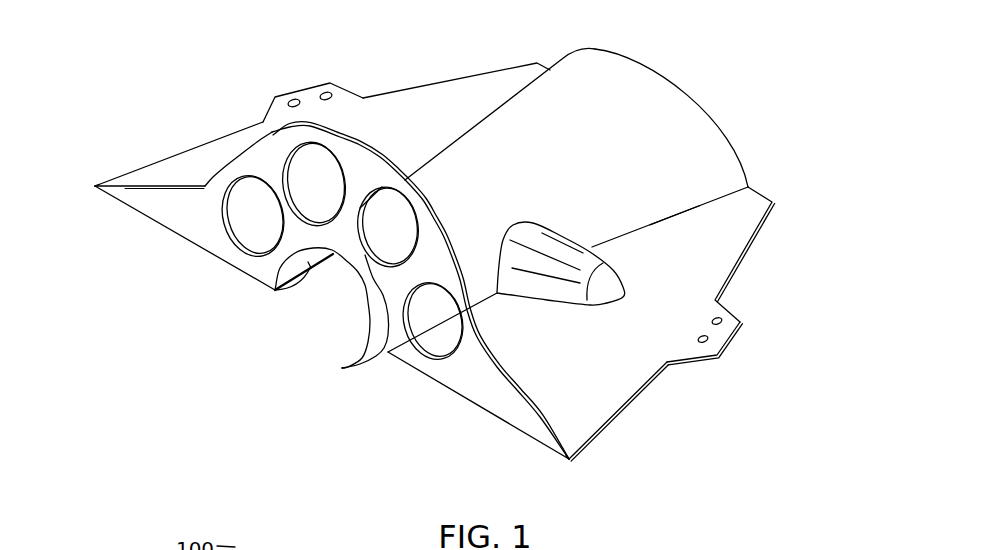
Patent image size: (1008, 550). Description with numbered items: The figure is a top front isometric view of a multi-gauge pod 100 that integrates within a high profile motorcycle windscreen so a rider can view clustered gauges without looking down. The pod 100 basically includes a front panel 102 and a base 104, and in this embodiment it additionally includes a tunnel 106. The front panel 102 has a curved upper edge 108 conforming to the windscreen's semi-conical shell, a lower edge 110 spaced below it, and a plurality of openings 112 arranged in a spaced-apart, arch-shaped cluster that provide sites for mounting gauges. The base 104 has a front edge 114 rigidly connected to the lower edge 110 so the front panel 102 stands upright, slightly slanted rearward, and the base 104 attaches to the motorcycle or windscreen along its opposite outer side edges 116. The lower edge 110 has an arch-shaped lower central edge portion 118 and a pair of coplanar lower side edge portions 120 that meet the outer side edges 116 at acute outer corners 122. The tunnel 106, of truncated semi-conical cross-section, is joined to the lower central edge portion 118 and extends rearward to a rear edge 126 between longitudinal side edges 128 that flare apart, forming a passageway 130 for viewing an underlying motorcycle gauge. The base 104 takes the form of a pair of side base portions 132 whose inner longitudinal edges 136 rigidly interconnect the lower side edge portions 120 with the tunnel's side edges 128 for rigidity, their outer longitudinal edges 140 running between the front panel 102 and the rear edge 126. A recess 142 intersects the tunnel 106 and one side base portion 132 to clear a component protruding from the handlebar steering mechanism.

The multi-gauge pod 100 is at (203, 36).
The front panel 102 is at (370, 130).
The base 104 is at (757, 254).
The tunnel 106 is at (654, 38).
The upper edge 108 is at (435, 212).
The lower edge 110 is at (411, 379).
The openings 112 is at (283, 251).
The front edge 114 is at (393, 165).
The outer side edges 116 is at (153, 183).
The lower central edge portion 118 is at (352, 268).
The lower side edge portions 120 is at (168, 228).
The outer corners 122 is at (95, 184).
The rear edge 126 is at (697, 98).
The longitudinal side edges 128 is at (310, 270).
The passageway 130 is at (347, 302).
The side base portions 132 is at (193, 153).
The inner longitudinal edge 136 is at (692, 212).
The outer longitudinal edges 140 is at (450, 80).
The recess 142 is at (557, 290).